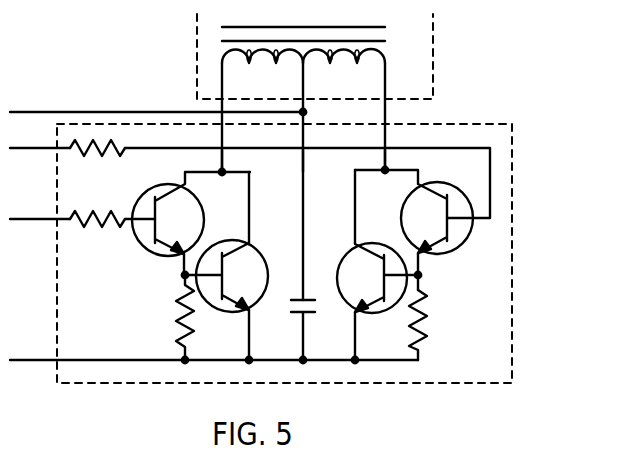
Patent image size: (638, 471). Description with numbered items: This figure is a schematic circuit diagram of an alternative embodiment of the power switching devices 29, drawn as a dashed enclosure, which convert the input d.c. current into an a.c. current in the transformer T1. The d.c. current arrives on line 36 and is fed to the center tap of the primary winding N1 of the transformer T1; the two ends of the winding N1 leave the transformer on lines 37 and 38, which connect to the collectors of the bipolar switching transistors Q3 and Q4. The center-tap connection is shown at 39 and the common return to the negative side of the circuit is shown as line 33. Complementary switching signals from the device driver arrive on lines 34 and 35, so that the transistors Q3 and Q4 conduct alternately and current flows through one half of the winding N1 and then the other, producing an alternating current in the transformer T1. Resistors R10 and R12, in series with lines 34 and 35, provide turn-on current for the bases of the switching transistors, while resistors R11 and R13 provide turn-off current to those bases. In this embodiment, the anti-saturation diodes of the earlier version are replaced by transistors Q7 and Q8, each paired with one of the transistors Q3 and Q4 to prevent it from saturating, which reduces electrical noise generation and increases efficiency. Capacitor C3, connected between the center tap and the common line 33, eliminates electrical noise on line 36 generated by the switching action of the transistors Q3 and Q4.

The power switching devices 29 is at (468, 124).
The ground/common line 33 is at (31, 338).
The line 34 is at (31, 196).
The line 35 is at (31, 131).
The line 36 is at (31, 92).
The line 37 is at (245, 135).
The line 38 is at (410, 135).
The center tap lead 39 is at (329, 135).
The transformer T1 is at (315, 57).
The winding N1 is at (303, 74).
The transistor Q7 is at (205, 214).
The transistor Q8 is at (400, 216).
The transistor Q3 is at (258, 256).
The transistor Q4 is at (333, 253).
The resistor R10 is at (105, 227).
The resistor R11 is at (173, 320).
The resistor R12 is at (106, 157).
The resistor R13 is at (430, 317).
The capacitor C3 is at (287, 310).